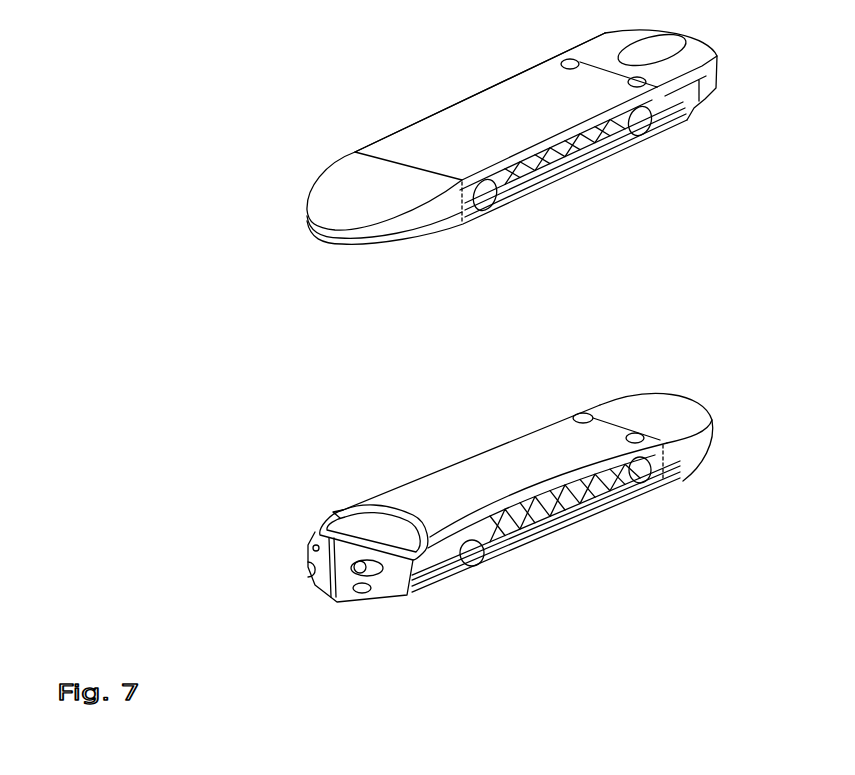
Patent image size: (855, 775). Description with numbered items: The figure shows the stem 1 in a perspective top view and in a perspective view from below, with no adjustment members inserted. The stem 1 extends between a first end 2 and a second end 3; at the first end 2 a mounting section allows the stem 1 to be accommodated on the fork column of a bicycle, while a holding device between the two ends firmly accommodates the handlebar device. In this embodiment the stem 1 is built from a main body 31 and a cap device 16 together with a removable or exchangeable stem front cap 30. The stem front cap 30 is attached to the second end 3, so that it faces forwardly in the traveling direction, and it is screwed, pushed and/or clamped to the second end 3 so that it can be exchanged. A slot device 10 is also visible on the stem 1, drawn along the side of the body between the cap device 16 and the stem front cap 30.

The stem 1 is at (170, 364).
The first end 2 is at (701, 113).
The second end 3 is at (321, 133).
The slot device 10 is at (490, 562).
The cap device 16 is at (463, 110).
The stem front cap 30 is at (422, 222).
The main body 31 is at (603, 162).